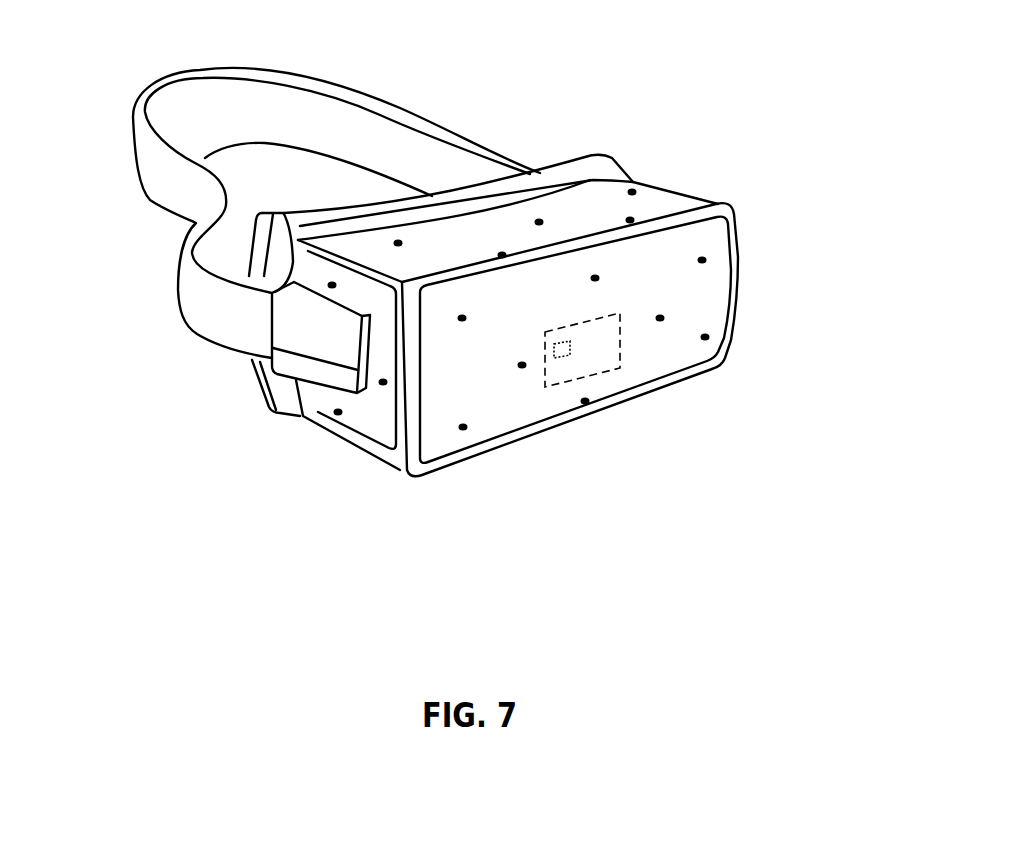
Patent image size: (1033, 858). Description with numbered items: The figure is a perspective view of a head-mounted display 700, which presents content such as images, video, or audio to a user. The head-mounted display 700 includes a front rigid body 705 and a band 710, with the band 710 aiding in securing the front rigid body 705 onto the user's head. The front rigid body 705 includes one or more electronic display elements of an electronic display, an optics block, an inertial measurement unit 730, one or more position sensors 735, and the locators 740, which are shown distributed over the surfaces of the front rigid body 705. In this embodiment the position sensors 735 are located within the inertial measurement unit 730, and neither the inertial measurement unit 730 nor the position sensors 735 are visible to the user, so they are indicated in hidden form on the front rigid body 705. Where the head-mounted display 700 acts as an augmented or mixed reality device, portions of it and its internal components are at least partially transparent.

The head-mounted display 700 is at (70, 72).
The front rigid body 705 is at (737, 213).
The band 710 is at (443, 128).
The inertial measurement unit 730 is at (620, 368).
The position sensors 735 is at (555, 360).
The locators 740 is at (707, 337).